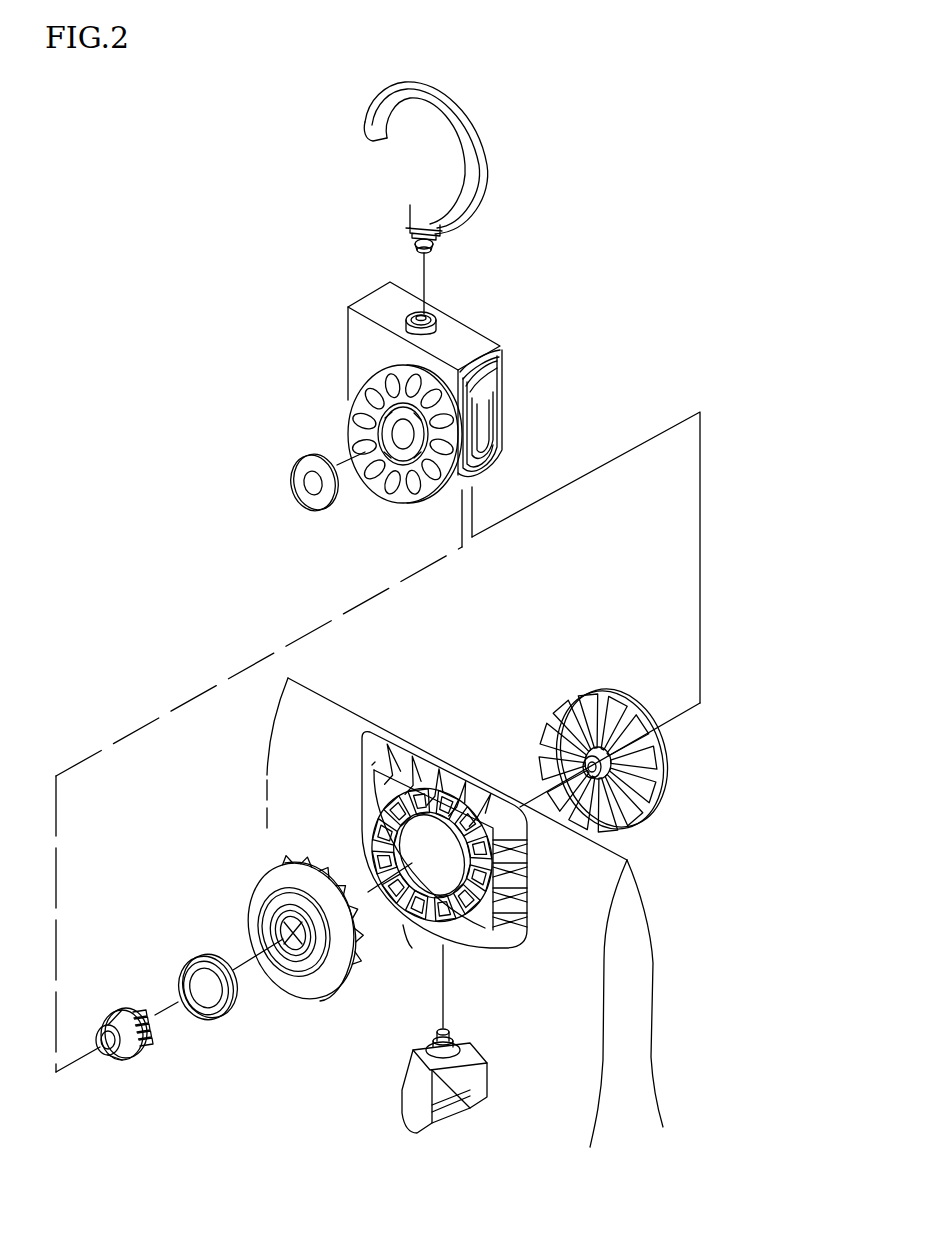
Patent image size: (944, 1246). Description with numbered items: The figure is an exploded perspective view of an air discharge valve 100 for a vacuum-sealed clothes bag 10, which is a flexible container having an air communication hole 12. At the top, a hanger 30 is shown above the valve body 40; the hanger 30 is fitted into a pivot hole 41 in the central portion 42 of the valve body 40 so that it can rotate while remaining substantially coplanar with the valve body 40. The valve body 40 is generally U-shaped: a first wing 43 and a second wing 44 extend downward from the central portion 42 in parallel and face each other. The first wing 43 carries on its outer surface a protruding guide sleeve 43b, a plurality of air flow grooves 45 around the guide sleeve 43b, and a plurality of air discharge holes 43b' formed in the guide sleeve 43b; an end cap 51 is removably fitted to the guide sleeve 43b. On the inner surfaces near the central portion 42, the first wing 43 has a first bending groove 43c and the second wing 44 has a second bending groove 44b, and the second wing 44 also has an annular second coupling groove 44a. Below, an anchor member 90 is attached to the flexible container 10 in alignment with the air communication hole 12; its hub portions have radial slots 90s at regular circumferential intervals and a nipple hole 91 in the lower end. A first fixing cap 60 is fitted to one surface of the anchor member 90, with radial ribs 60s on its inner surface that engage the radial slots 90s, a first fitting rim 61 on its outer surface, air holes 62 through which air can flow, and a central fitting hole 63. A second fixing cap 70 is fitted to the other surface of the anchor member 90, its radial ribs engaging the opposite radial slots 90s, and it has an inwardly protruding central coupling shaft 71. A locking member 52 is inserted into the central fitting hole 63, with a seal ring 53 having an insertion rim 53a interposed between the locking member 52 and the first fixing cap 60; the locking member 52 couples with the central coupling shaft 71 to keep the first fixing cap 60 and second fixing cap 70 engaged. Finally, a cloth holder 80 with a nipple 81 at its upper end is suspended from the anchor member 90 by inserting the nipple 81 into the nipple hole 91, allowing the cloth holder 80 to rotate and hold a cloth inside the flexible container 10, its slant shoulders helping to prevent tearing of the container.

The air discharge valve 100 is at (688, 315).
The vacuum-sealed clothes bag 10 is at (642, 892).
The air communication hole 12 is at (404, 928).
The hanger 30 is at (459, 116).
The valve body 40 is at (508, 346).
The pivot hole 41 is at (424, 312).
The central portion 42 is at (470, 326).
The first wing 43 is at (352, 338).
The guide sleeve 43b is at (366, 434).
The air discharge holes 43b' is at (384, 470).
The first bending groove 43c is at (480, 379).
The second wing 44 is at (505, 448).
The second coupling groove 44a is at (492, 420).
The second bending groove 44b is at (508, 352).
The air flow grooves 45 is at (356, 400).
The end cap 51 is at (290, 485).
The locking member 52 is at (127, 1053).
The seal ring 53 is at (208, 1010).
The insertion rim 53a is at (200, 1008).
The first fixing cap 60 is at (307, 945).
The radial ribs 60s is at (362, 945).
The first fitting rim 61 is at (267, 897).
The air holes 62 is at (290, 962).
The central fitting hole 63 is at (312, 888).
The second fixing cap 70 is at (616, 759).
The central coupling shaft 71 is at (580, 771).
The cloth holder 80 is at (457, 1105).
The nipple 81 is at (455, 1032).
The anchor member 90 is at (468, 862).
The radial slots 90s is at (510, 925).
The nipple hole 91 is at (446, 938).